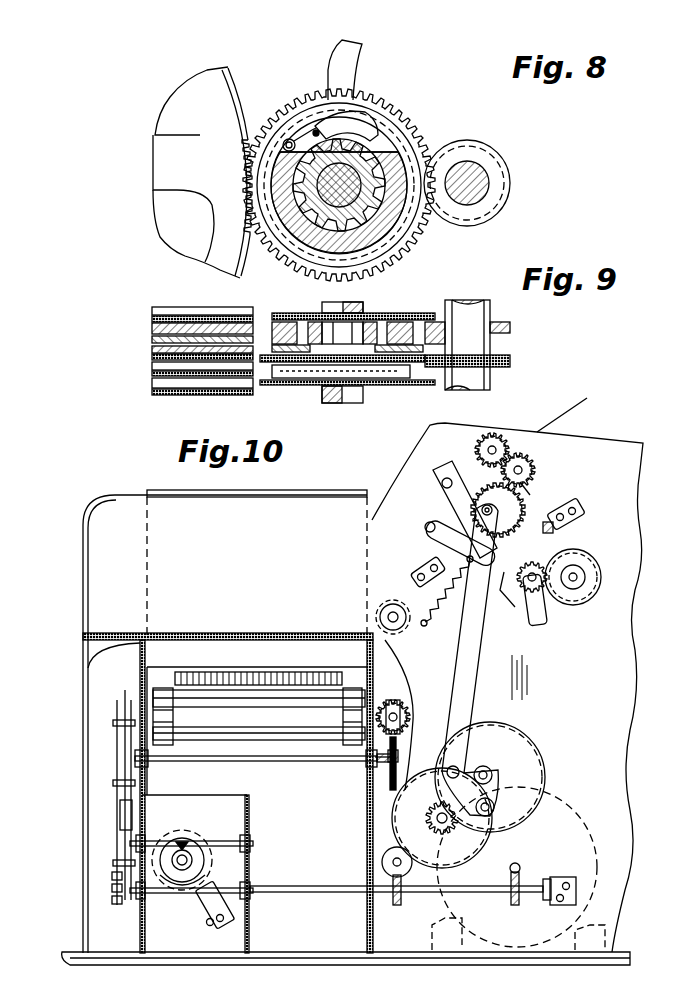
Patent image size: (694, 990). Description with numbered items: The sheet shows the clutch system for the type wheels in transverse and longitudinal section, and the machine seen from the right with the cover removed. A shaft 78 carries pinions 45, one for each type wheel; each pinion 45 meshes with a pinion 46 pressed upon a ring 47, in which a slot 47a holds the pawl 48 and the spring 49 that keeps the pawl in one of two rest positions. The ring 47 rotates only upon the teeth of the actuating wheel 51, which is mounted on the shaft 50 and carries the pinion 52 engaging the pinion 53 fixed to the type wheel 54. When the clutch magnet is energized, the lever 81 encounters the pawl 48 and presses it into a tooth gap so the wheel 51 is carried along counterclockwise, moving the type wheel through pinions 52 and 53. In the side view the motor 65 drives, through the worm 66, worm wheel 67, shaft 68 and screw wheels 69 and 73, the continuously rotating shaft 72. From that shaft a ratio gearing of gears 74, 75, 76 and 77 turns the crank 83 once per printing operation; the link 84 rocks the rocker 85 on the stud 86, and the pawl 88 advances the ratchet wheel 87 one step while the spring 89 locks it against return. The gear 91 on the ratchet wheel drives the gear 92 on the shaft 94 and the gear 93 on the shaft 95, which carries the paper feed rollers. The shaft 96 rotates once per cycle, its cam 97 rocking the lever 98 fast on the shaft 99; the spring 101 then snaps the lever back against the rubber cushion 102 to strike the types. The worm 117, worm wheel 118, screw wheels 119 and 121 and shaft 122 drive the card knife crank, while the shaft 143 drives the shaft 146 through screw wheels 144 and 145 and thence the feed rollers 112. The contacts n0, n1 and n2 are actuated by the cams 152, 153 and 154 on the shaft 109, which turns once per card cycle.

In FIG. 8, the pinion 53 is at (220, 88).
In FIG. 9, the pinion 53 is at (160, 320).
In FIG. 8, the lever 81 is at (343, 62).
In FIG. 8, the spring 49 is at (298, 136).
In FIG. 8, the pawl 48 is at (363, 125).
In FIG. 8, the slot 47a is at (380, 138).
In FIG. 9, the slot 47a is at (388, 388).
In FIG. 8, the shaft 50 is at (388, 160).
In FIG. 9, the shaft 50 is at (350, 393).
In FIG. 8, the shaft 78 is at (477, 165).
In FIG. 9, the shaft 78 is at (467, 323).
In FIG. 8, the pinion 45 is at (488, 200).
In FIG. 9, the pinion 45 is at (510, 330).
In FIG. 8, the pinion 46 is at (392, 237).
In FIG. 9, the pinion 46 is at (423, 317).
In FIG. 8, the actuating wheel 51 is at (290, 240).
In FIG. 9, the actuating wheel 51 is at (372, 317).
In FIG. 8, the pinion 52 is at (298, 253).
In FIG. 9, the pinion 52 is at (388, 320).
In FIG. 8, the ring 47 is at (313, 233).
In FIG. 9, the ring 47 is at (290, 323).
In FIG. 9, the type wheel 54 is at (163, 312).
In FIG. 10, the gear 93 is at (488, 437).
In FIG. 10, the shaft 95 is at (495, 449).
In FIG. 10, the shaft 94 is at (522, 470).
In FIG. 10, the gear 92 is at (530, 469).
In FIG. 10, the gear 91 is at (518, 487).
In FIG. 10, the spring 89 is at (560, 506).
In FIG. 10, the stud 86 is at (486, 505).
In FIG. 10, the pawl 88 is at (448, 503).
In FIG. 10, the ratchet wheel 87 is at (505, 520).
In FIG. 10, the shaft 99 is at (447, 542).
In FIG. 10, the lever 98 is at (426, 529).
In FIG. 10, the rubber cushion 102 is at (418, 556).
In FIG. 10, the spring 101 is at (445, 613).
In FIG. 10, the shaft 96 is at (531, 582).
In FIG. 10, the cam 97 is at (542, 610).
In FIG. 10, the rocker 85 is at (465, 665).
In FIG. 10, the shaft 146 is at (400, 710).
In FIG. 10, the screw wheel 145 is at (398, 719).
In FIG. 10, the gear 77 is at (507, 757).
In FIG. 10, the crank 83 is at (488, 786).
In FIG. 10, the link 84 is at (473, 795).
In FIG. 10, the gear 76 is at (458, 823).
In FIG. 10, the gear 75 is at (450, 852).
In FIG. 10, the motor 65 is at (573, 860).
In FIG. 10, the worm 66 is at (512, 872).
In FIG. 10, the worm wheel 67 is at (515, 907).
In FIG. 10, the shaft 68 is at (337, 893).
In FIG. 10, the screw wheel 69 is at (399, 906).
In FIG. 10, the shaft 72 is at (382, 866).
In FIG. 10, the screw wheel 73 is at (383, 858).
In FIG. 10, the gear 74 is at (392, 843).
In FIG. 10, the feed rollers 112 is at (162, 737).
In FIG. 10, the shaft 143 is at (282, 762).
In FIG. 10, the screw wheel 144 is at (388, 780).
In FIG. 10, the screw wheel 121 is at (184, 833).
In FIG. 10, the shaft 122 is at (250, 845).
In FIG. 10, the cam 152 is at (195, 852).
In FIG. 10, the cam 153 is at (166, 836).
In FIG. 10, the screw wheel 119 is at (190, 862).
In FIG. 10, the worm wheel 118 is at (200, 868).
In FIG. 10, the worm 117 is at (172, 893).
In FIG. 10, the cam 154 is at (160, 845).
In FIG. 10, the shaft 109 is at (168, 860).
In FIG. 10, the contact n0 is at (120, 878).
In FIG. 10, the contact n1 is at (115, 884).
In FIG. 10, the contact n2 is at (120, 896).